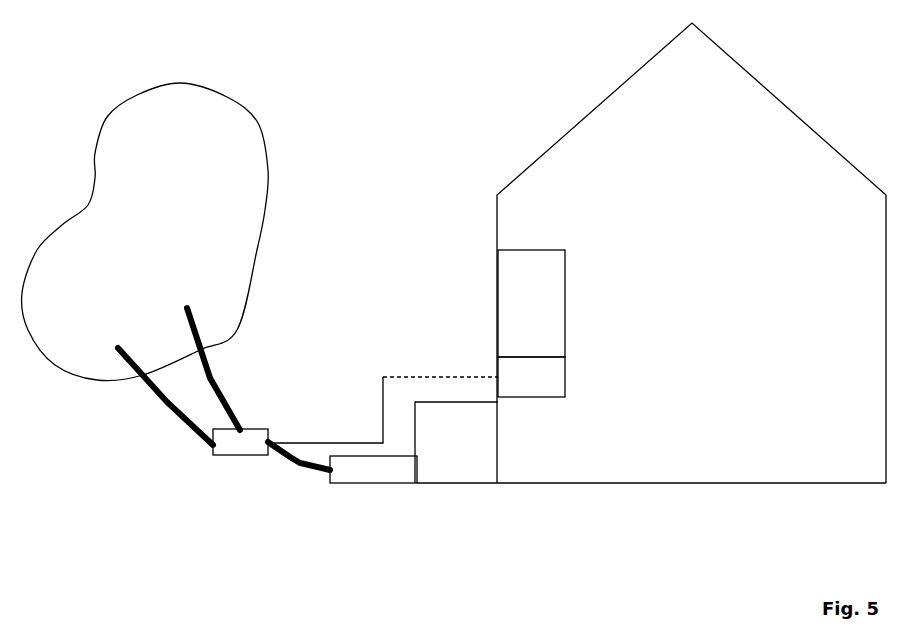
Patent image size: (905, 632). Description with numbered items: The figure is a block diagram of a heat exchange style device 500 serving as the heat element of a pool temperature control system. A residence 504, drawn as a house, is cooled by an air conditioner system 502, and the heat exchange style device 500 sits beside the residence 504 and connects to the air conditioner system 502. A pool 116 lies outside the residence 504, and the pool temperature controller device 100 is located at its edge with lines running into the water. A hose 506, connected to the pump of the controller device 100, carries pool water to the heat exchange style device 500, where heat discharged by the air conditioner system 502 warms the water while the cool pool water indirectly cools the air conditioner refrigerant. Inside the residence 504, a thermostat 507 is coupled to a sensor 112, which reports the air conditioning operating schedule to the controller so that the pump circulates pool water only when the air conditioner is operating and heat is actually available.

The pool temperature controller device 100 is at (242, 455).
The sensor 112 is at (531, 377).
The pool 116 is at (145, 232).
The heat exchange style device 500 is at (373, 469).
The air conditioner system 502 is at (457, 483).
The residence 504 is at (691, 253).
The hose 506 is at (288, 450).
The thermostat 507 is at (531, 303).